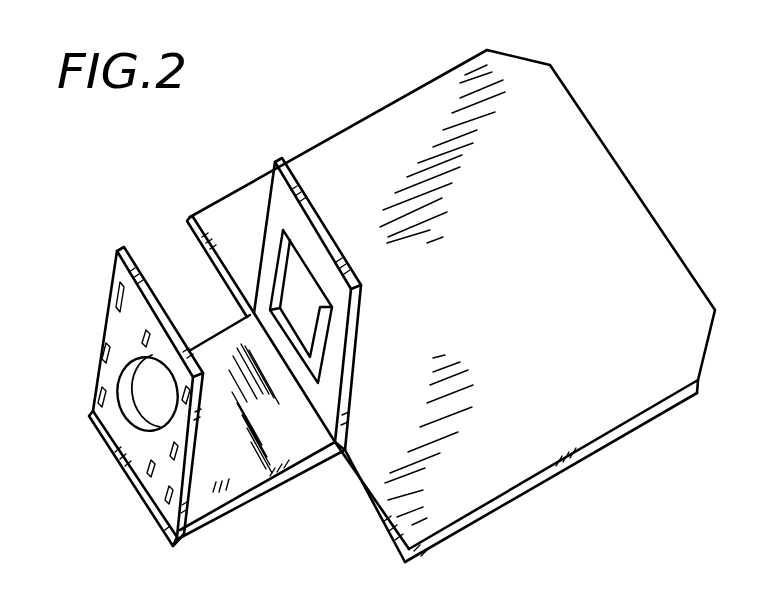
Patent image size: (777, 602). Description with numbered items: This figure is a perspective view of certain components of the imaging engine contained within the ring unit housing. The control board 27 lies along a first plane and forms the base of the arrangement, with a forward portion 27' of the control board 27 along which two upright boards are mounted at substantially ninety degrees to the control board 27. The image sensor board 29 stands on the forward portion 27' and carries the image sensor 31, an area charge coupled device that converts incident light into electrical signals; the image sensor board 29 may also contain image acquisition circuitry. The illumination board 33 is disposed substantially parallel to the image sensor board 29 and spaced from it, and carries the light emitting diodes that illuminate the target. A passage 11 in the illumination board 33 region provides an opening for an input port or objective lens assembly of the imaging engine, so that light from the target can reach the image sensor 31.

The control board 27 is at (451, 306).
The forward portion of the control board 27' is at (260, 446).
The image sensor board 29 is at (265, 352).
The image sensor 31 is at (298, 293).
The illumination board 33 is at (112, 396).
The passage 11 is at (127, 420).